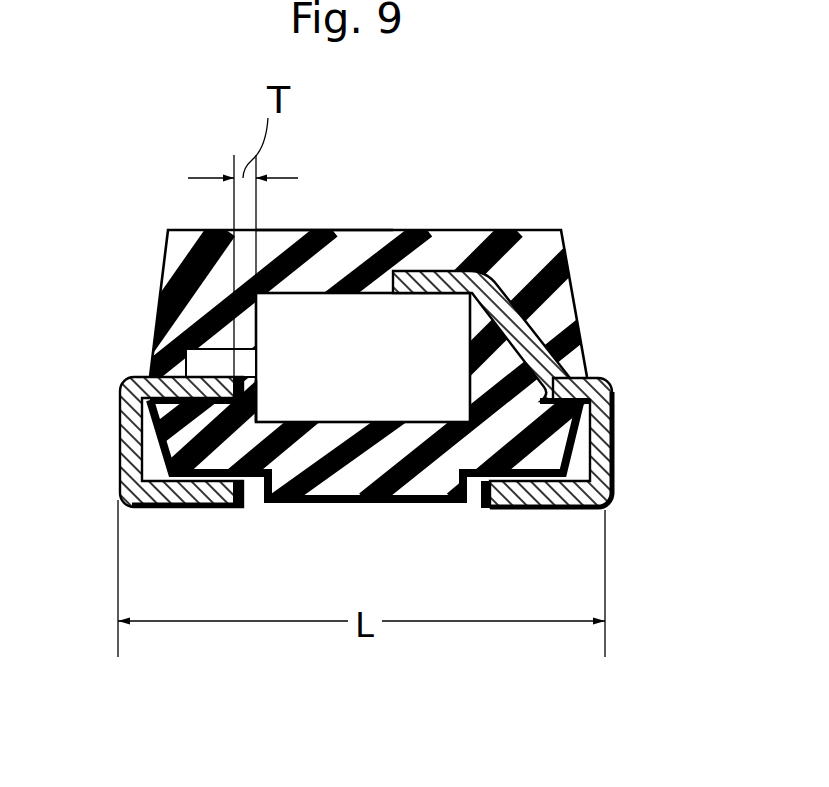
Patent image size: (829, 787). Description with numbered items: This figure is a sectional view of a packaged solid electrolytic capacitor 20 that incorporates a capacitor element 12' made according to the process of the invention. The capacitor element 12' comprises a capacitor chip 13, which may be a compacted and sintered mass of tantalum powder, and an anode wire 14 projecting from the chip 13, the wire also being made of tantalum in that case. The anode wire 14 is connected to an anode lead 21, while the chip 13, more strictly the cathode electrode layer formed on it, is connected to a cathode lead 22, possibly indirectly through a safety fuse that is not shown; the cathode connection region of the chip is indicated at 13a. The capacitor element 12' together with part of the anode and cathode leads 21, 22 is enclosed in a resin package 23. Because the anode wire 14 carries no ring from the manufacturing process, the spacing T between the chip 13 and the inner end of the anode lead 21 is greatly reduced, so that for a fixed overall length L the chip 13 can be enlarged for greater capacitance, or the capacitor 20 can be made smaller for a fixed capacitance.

The packaged solid electrolytic capacitor 20 is at (518, 222).
The capacitor element 12' is at (328, 211).
The capacitor chip 13 is at (332, 392).
The chip electrode 13a is at (248, 410).
The anode wire 14 is at (217, 362).
The resin package 23 is at (447, 253).
The anode lead 21 is at (120, 457).
The cathode lead 22 is at (613, 417).